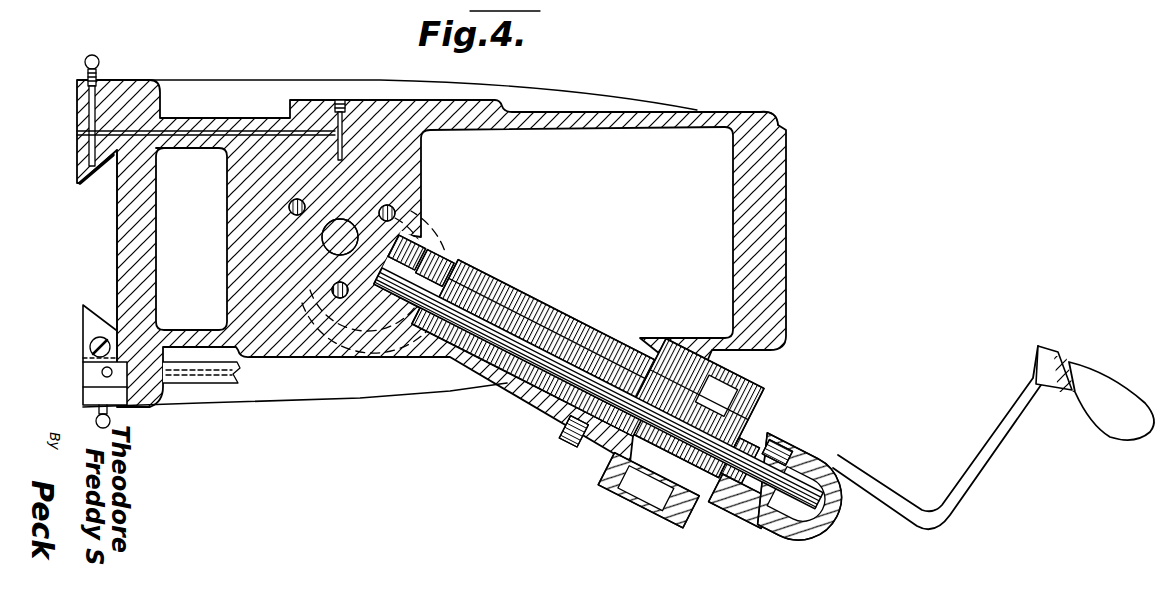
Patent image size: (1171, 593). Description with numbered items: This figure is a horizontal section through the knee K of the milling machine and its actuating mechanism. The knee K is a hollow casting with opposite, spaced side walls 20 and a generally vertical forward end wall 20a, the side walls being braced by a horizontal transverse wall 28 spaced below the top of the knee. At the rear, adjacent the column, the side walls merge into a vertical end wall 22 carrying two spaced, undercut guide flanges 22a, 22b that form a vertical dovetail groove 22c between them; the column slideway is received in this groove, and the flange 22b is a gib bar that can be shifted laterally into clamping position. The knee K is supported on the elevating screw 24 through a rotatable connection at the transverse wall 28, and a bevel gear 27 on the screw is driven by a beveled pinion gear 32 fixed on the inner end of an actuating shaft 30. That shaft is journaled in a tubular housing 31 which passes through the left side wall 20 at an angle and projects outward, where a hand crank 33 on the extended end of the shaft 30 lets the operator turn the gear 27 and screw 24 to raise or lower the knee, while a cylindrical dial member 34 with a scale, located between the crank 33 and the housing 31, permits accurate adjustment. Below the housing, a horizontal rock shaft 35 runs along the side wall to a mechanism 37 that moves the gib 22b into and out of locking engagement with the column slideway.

The side walls 20 is at (565, 100).
The forward end wall 20a is at (762, 232).
The knee K is at (714, 111).
The end wall 22 is at (137, 240).
The guide flange 22a is at (87, 163).
The gib member 22b is at (100, 332).
The dovetail groove 22c is at (105, 200).
The elevating screw 24 is at (352, 236).
The bevel gear 27 is at (418, 237).
The transverse wall 28 is at (400, 158).
The actuating shaft 30 is at (520, 343).
The tubular housing 31 is at (540, 274).
The beveled pinion gear 32 is at (432, 247).
The hand crank 33 is at (957, 495).
The dial member 34 is at (745, 404).
The rock shaft 35 is at (213, 383).
The gib actuating mechanism 37 is at (107, 360).